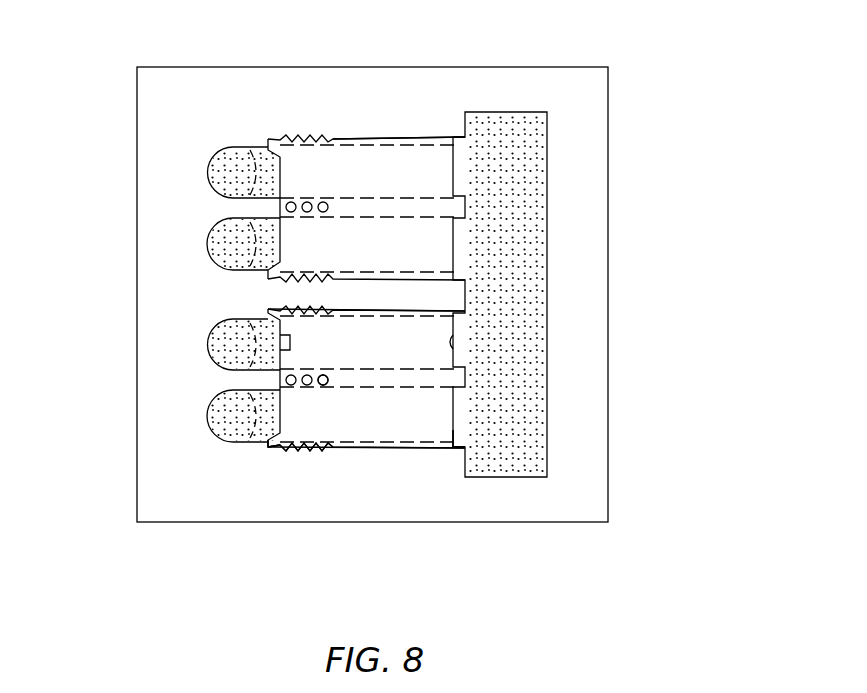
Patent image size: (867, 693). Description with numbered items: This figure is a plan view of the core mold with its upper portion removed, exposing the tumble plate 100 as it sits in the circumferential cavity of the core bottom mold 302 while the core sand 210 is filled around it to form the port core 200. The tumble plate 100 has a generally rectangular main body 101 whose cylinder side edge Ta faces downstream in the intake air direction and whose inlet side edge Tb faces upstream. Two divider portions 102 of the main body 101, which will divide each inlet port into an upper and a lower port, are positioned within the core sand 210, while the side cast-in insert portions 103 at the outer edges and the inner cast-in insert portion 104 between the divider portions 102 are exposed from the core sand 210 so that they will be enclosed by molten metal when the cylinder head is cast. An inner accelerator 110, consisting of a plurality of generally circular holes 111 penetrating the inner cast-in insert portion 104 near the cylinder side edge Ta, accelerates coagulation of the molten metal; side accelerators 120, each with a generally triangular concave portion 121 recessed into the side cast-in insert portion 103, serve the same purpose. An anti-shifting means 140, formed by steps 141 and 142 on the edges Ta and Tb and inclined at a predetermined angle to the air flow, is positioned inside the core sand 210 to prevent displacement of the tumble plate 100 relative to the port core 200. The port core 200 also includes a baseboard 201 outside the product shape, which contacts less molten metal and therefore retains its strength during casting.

The tumble plate 100 is at (401, 124).
The main body 101 is at (345, 153).
The divider portion 102 is at (450, 168).
The side cast-in insert portion 103 is at (453, 132).
The inner cast-in insert portion 104 is at (450, 212).
The inner accelerator 110 is at (312, 392).
The holes 111 is at (327, 380).
The side accelerator 120 is at (316, 465).
The concave portion 121 is at (290, 457).
The anti-shifting means 140 is at (227, 577).
The step 141 is at (263, 432).
The step 142 is at (457, 432).
The port core 200 is at (205, 238).
The baseboard 201 is at (508, 110).
The core sand 210 is at (542, 402).
The core bottom mold 302 is at (180, 80).
The cylinder side edge Ta is at (277, 340).
The inlet side edge Tb is at (457, 341).